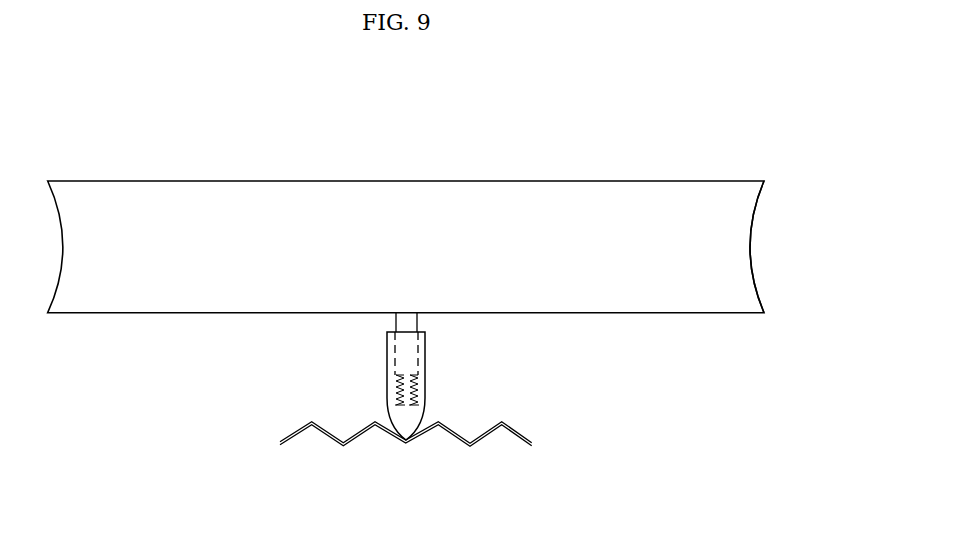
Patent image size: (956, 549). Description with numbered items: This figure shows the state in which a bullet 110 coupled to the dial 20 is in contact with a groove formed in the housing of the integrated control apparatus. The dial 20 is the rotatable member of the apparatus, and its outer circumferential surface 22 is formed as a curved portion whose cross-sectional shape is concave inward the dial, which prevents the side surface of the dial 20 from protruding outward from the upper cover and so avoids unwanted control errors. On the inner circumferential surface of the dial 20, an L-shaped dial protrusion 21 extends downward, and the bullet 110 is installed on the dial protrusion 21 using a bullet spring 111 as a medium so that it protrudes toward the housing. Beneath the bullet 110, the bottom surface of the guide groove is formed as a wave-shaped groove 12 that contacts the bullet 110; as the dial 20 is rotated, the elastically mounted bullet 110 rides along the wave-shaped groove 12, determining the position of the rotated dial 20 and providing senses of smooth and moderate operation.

The dial 20 is at (513, 173).
The outer circumferential surface 22 is at (750, 247).
The dial protrusion 21 is at (411, 326).
The bullet 110 is at (405, 443).
The bullet spring 111 is at (402, 384).
The wave-shaped groove 12 is at (452, 430).